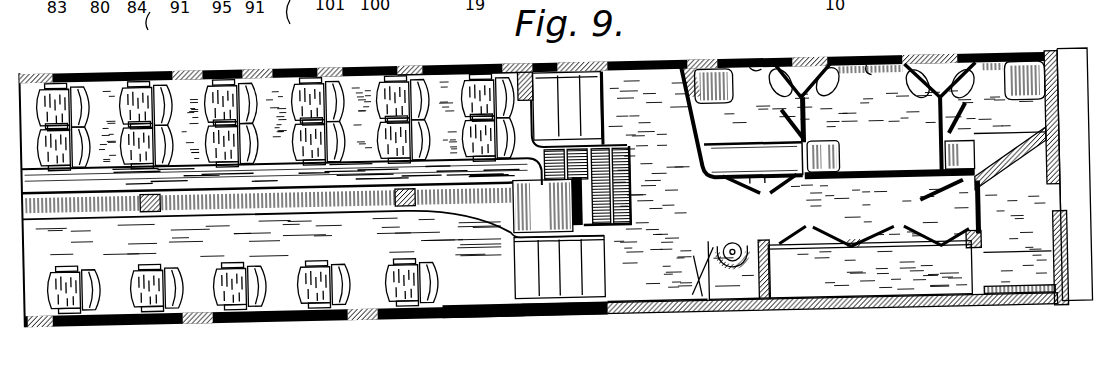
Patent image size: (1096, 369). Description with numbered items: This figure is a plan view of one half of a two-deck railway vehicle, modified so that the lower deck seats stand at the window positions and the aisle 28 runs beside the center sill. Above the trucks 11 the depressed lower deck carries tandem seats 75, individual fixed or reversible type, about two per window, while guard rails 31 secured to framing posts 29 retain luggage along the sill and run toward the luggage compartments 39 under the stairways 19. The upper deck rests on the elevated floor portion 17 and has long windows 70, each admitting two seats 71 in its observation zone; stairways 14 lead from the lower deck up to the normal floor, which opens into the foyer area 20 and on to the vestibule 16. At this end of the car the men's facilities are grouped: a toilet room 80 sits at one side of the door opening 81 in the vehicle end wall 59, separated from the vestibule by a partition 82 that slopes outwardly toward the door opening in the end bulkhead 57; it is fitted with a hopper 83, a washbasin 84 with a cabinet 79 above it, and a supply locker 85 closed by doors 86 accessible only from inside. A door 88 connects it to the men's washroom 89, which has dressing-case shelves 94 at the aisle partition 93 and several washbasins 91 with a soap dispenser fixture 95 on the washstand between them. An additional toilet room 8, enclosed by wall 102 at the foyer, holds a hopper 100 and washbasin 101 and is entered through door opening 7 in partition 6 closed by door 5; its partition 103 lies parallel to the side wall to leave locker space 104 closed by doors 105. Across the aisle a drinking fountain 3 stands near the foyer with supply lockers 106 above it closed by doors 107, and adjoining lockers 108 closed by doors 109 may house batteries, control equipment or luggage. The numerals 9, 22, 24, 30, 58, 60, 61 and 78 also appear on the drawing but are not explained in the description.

The drinking fountain 3 is at (722, 251).
The door 5 is at (787, 131).
The partition 6 is at (823, 156).
The door opening 7 is at (808, 127).
The additional toilet room 8 is at (697, 127).
The bracket 9 is at (716, 217).
The supporting trucks 11 is at (281, 55).
The stairways 14 is at (595, 96).
The vestibule 16 is at (992, 230).
The elevated floor portion 17 is at (112, 158).
The stairways 19 is at (630, 172).
The foyer area 20 is at (656, 243).
The side wall 22 is at (370, 316).
The side wall 24 is at (608, 63).
The aisle 28 is at (200, 280).
The framing posts 29 is at (168, 210).
The rail 30 is at (275, 177).
The guard rails 31 is at (55, 208).
The luggage compartments 39 is at (562, 210).
The end bulkhead 57 is at (977, 242).
The shelf 58 is at (942, 200).
The vehicle end wall 59 is at (1050, 126).
The sill 60 is at (993, 312).
The sill 61 is at (1023, 304).
The windows 70 is at (433, 62).
The seats 71 is at (157, 92).
The seats 75 is at (80, 271).
The seat 78 is at (247, 317).
The cabinets 79 is at (942, 41).
The toilet room 80 is at (999, 72).
The door opening 81 is at (1050, 201).
The partition 82 is at (1003, 171).
The hopper 83 is at (1037, 70).
The washbasin 84 is at (982, 65).
The supply locker 85 is at (961, 154).
The doors 86 is at (970, 146).
The door 88 is at (943, 125).
The washroom 89 is at (879, 111).
The washbasins 91 is at (838, 71).
The aisle partition 93 is at (905, 190).
The dressing-case shelves 94 is at (834, 154).
The soap dispenser fixture 95 is at (873, 71).
The hopper 100 is at (719, 73).
The washbasin 101 is at (763, 62).
The wall 102 is at (651, 184).
The partition 103 is at (707, 149).
The locker space 104 is at (753, 159).
The doors 105 is at (749, 193).
The supply lockers 106 is at (739, 269).
The doors 107 is at (672, 313).
The lockers 108 is at (870, 269).
The doors 109 is at (843, 229).